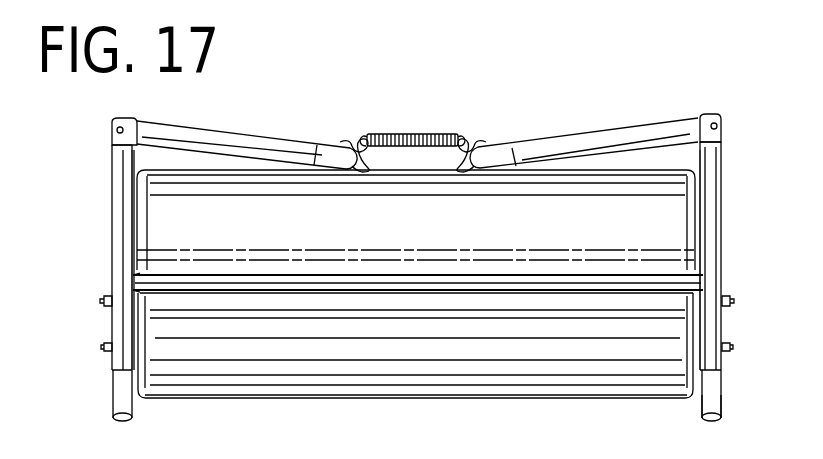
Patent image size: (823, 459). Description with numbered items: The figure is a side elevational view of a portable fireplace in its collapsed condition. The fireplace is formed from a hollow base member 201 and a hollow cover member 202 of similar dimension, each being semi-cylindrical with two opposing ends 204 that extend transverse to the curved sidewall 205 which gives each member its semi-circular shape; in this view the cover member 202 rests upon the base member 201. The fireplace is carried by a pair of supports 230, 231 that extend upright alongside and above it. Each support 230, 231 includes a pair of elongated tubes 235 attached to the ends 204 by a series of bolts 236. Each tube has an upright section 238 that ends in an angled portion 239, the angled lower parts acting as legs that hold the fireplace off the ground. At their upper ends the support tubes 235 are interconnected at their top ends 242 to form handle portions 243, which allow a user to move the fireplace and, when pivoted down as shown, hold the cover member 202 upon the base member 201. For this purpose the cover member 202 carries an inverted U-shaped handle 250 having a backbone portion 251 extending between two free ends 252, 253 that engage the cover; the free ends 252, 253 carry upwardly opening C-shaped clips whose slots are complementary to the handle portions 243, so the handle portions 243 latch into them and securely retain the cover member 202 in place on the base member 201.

The hollow base member 201 is at (640, 378).
The hollow cover member 202 is at (648, 190).
The opposing ends 204 is at (126, 212).
The curved sidewall 205 is at (593, 224).
The support 230 is at (730, 258).
The support 231 is at (104, 174).
The elongated tubes 235 is at (112, 254).
The bolts 236 is at (106, 303).
The upright section 238 is at (706, 190).
The angled portion 239 is at (722, 392).
The top ends 242 is at (322, 150).
The handle portions 243 is at (490, 148).
The handle 250 is at (401, 133).
The backbone portion 251 is at (432, 133).
The free end 252 is at (458, 160).
The free end 253 is at (380, 160).